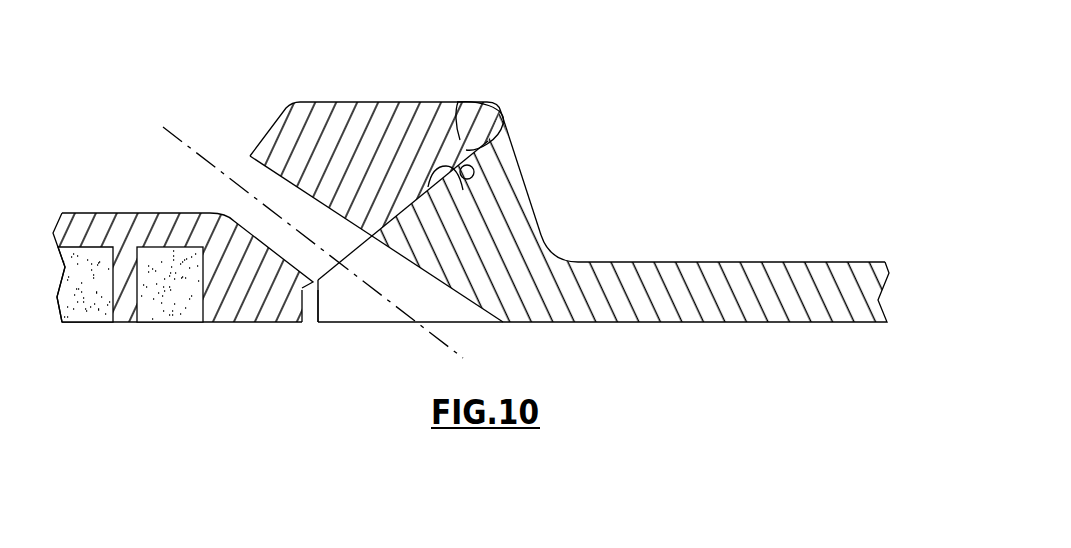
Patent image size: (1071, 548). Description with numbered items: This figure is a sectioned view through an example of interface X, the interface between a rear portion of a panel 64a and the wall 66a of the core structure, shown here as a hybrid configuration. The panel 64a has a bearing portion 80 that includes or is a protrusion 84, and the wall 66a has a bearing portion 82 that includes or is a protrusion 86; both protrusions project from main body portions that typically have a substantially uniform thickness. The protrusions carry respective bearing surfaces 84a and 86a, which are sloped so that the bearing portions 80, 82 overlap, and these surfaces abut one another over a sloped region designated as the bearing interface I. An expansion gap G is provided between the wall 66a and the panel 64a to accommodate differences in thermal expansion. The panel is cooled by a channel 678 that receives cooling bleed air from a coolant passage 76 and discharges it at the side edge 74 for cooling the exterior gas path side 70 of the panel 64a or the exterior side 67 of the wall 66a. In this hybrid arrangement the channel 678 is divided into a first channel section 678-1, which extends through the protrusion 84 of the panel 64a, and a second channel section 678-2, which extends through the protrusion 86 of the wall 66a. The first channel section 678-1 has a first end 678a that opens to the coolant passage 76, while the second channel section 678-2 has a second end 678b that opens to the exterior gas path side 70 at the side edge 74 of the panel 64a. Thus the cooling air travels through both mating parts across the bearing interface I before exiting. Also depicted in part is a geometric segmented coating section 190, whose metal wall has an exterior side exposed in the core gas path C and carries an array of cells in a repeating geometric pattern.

The panel 64a is at (108, 228).
The wall 66a is at (655, 278).
The exterior side of the wall 67 is at (665, 322).
The exterior gas path side 70 is at (213, 322).
The side edge 74 is at (262, 343).
The coolant passage 76 is at (203, 121).
The bearing portion of the panel 80 is at (318, 130).
The bearing portion of the wall 82 is at (497, 247).
The protrusion of the panel 84 is at (370, 77).
The bearing surface of the panel protrusion 84a is at (466, 165).
The protrusion of the wall 86 is at (530, 183).
The bearing surface of the wall protrusion 86a is at (484, 188).
The geometric segmented coating section 190 is at (95, 310).
The channel 678 is at (243, 210).
The first channel section 678-1 is at (236, 180).
The second channel section 678-2 is at (362, 300).
The first end 678a is at (248, 155).
The second end 678b is at (465, 310).
The expansion gap G is at (308, 322).
The bearing interface I is at (407, 198).
The core gas path C is at (594, 366).
The interface X is at (142, 397).